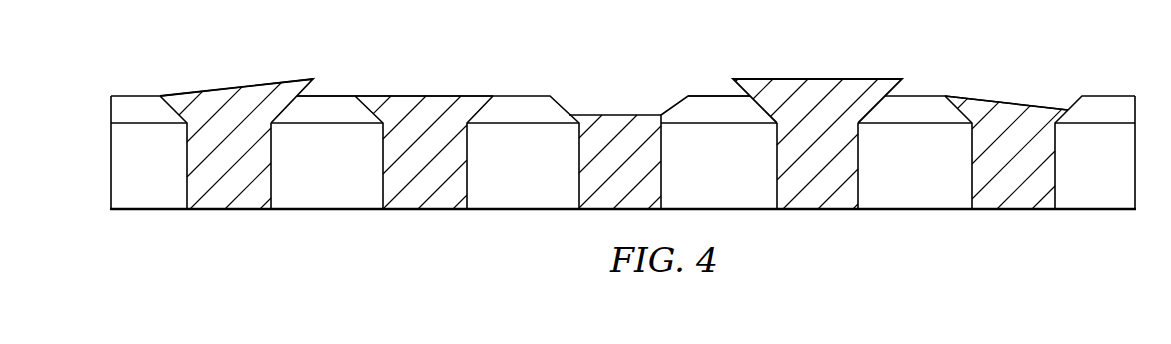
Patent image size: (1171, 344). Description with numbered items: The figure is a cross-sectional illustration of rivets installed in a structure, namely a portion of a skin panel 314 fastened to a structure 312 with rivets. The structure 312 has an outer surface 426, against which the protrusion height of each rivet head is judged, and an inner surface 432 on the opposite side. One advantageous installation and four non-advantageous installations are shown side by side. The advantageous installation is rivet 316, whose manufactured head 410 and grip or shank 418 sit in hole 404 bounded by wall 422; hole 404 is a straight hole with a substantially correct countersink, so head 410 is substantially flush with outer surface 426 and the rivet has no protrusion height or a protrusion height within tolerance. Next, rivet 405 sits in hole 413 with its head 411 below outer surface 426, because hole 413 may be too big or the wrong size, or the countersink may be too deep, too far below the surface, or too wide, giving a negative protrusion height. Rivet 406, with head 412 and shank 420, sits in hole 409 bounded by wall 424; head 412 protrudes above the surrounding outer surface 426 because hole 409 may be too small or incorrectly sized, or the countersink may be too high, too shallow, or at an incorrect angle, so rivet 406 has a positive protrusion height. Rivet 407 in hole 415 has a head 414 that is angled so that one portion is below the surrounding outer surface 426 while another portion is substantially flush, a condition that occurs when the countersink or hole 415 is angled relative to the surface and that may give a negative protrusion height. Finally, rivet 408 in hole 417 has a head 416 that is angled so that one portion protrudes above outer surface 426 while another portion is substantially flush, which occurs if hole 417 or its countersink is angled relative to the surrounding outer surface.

The structure 312 is at (539, 171).
The inner surface 432 is at (932, 213).
The hole 417 is at (183, 204).
The wall 422 is at (382, 150).
The outer surface 426 is at (337, 93).
The hole 404 is at (470, 203).
The hole 413 is at (665, 202).
The wall 424 is at (775, 157).
The skin panel 314 is at (708, 99).
The hole 409 is at (861, 202).
The hole 415 is at (1060, 202).
The rivet 408 is at (256, 69).
The head 416 is at (210, 87).
The rivet 316 is at (426, 140).
The grip or shank 418 is at (427, 182).
The manufactured head 410 is at (400, 95).
The rivet 405 is at (598, 95).
The head 411 is at (620, 114).
The rivet 406 is at (818, 133).
The shank 420 is at (833, 182).
The head 412 is at (788, 79).
The rivet 407 is at (1005, 82).
The head 414 is at (1040, 102).